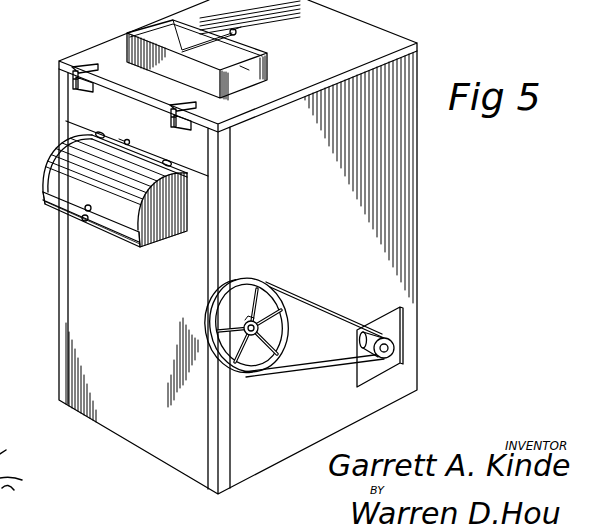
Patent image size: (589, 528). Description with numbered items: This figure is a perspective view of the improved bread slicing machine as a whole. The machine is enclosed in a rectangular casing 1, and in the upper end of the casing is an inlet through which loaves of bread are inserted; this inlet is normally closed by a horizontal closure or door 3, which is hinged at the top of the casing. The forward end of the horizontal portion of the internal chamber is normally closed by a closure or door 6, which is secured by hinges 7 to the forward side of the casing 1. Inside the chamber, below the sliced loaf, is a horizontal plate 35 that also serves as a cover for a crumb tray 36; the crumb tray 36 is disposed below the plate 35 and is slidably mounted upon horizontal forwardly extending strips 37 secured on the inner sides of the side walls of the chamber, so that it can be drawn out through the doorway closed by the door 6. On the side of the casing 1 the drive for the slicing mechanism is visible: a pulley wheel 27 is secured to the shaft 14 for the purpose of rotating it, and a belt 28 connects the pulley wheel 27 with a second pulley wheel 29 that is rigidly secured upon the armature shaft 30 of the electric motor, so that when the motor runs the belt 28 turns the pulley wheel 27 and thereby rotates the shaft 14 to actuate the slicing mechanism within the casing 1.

The rectangular casing 1 is at (300, 165).
The horizontal closure or door 3 is at (270, 73).
The closure or door 6 is at (115, 191).
The hinges 7 is at (169, 163).
The shaft 14 is at (252, 334).
The pulley wheel 27 is at (263, 271).
The belt 28 is at (317, 302).
The pulley wheel 29 is at (385, 359).
The armature shaft 30 is at (360, 340).
The horizontal plate 35 is at (110, 218).
The crumb tray 36 is at (115, 228).
The horizontal forwardly extending strips 37 is at (138, 246).